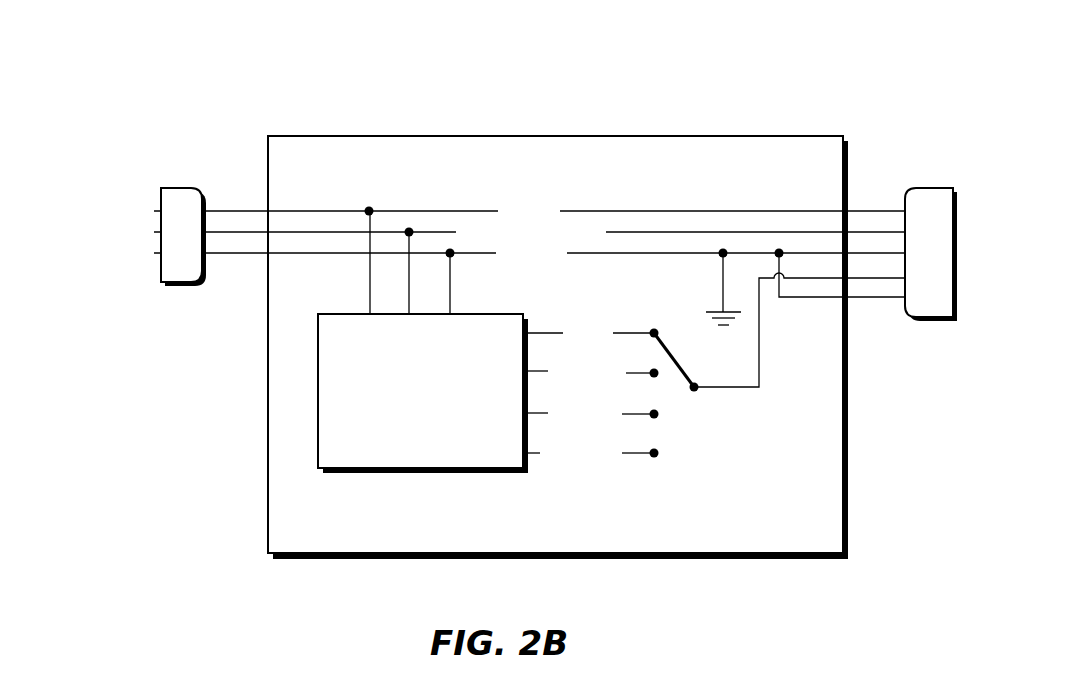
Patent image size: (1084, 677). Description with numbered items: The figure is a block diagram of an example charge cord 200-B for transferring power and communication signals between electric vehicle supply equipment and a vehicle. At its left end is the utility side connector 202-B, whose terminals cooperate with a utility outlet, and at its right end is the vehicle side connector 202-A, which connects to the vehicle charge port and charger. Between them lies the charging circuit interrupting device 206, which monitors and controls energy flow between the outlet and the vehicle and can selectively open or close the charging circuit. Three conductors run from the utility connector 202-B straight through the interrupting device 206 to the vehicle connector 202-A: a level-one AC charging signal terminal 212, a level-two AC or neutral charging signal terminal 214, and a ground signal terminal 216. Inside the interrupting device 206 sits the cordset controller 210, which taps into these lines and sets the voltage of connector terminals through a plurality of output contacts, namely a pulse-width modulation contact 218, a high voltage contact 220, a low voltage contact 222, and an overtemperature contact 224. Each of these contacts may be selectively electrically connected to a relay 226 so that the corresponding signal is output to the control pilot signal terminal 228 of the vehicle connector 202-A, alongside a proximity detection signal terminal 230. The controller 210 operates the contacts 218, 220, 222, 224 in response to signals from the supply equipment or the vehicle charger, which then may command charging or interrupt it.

The charge cord 200-B is at (132, 123).
The utility side connector 202-B is at (223, 186).
The vehicle side connector 202-A is at (886, 178).
The charging circuit interrupting device 206 is at (542, 546).
The cordset controller 210 is at (407, 427).
The Level 1 AC charging signal terminal 212 is at (634, 211).
The Level 2 AC or Neutral charging signal terminal 214 is at (703, 231).
The ground signal terminal 216 is at (226, 254).
The pulse-width modulation (PWM) contact 218 is at (649, 333).
The high voltage contact 220 is at (636, 377).
The low voltage contact 222 is at (636, 418).
The overtemperature contact 224 is at (633, 457).
The relay 226 is at (684, 356).
The control pilot signal terminal 228 is at (812, 280).
The proximity detection signal terminal 230 is at (866, 297).